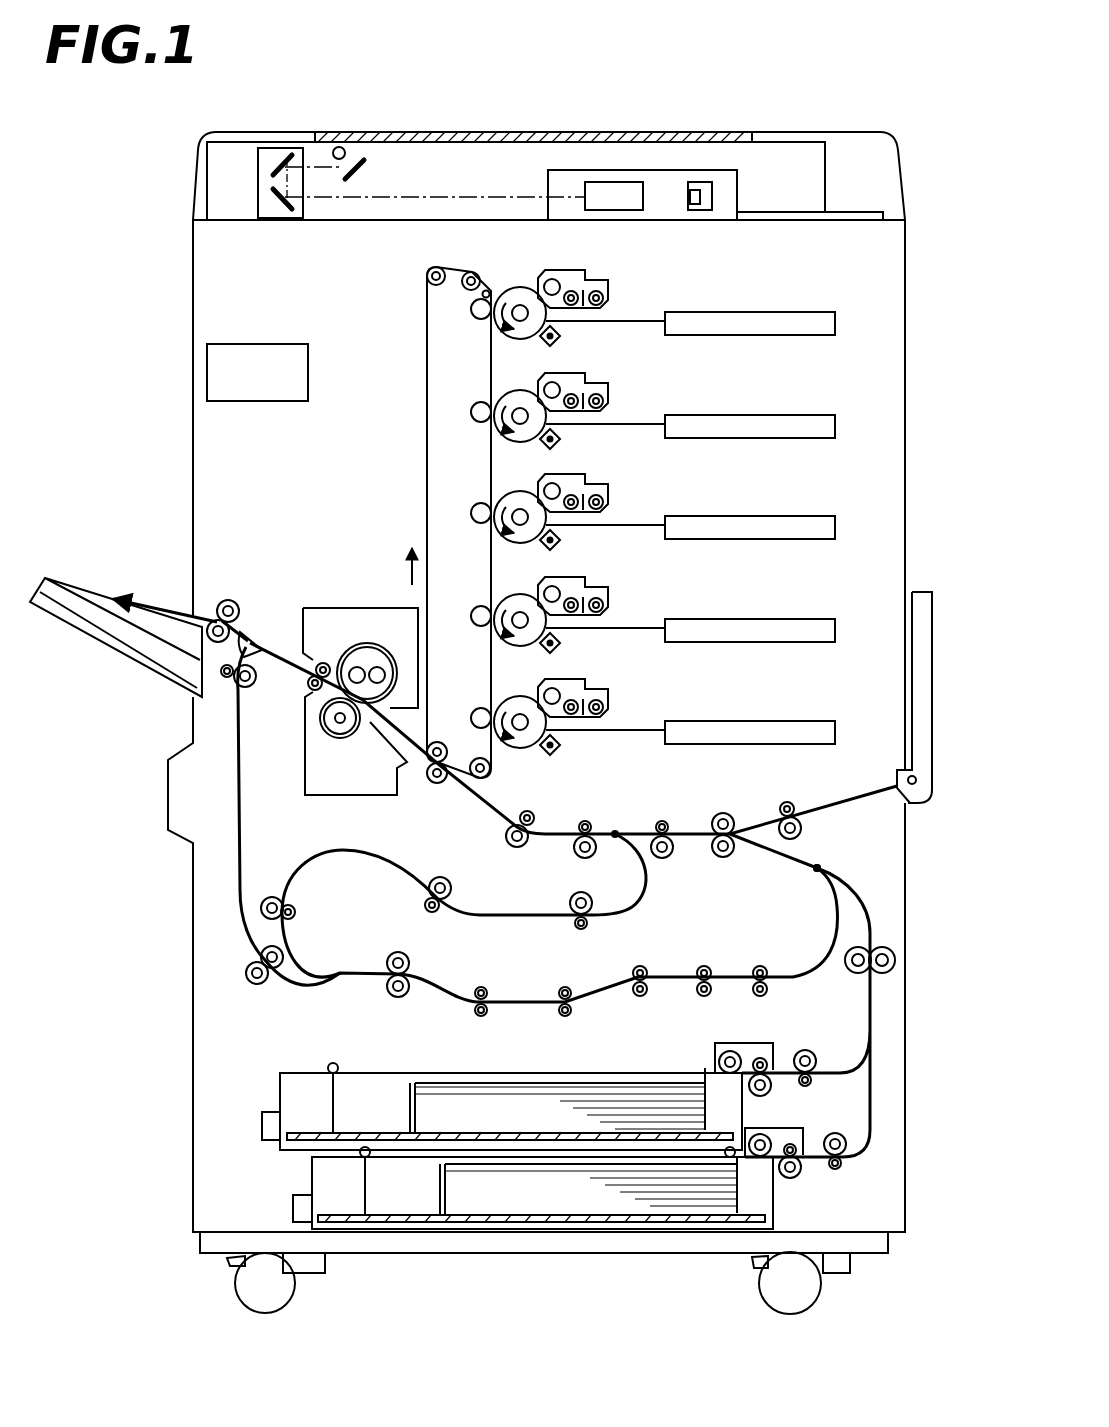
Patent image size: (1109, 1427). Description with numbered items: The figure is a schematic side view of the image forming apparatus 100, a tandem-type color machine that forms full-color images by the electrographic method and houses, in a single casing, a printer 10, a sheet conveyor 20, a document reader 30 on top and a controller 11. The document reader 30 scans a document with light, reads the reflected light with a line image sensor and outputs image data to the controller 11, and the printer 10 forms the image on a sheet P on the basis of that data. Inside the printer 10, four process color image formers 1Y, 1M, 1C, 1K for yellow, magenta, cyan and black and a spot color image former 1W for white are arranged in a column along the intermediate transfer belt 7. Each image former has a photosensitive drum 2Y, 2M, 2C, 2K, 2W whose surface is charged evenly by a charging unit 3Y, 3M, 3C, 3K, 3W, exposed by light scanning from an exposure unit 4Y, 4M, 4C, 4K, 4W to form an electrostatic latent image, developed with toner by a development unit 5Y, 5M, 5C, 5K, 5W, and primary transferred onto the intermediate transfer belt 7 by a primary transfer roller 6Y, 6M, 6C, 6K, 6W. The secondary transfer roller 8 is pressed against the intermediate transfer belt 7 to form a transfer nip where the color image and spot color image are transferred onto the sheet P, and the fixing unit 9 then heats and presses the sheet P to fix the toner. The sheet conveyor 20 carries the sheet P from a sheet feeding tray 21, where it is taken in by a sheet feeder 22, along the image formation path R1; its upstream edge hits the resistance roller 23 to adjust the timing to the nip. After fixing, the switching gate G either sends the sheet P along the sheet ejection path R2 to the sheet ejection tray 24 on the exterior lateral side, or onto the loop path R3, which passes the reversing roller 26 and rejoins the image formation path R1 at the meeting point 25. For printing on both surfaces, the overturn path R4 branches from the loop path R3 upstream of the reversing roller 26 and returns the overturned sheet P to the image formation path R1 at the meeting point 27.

The image forming apparatus 100 is at (713, 113).
The document reader 30 is at (805, 178).
The printer 10 is at (870, 257).
The controller 11 is at (207, 365).
The image former 1Y is at (664, 308).
The image former 1M is at (665, 411).
The image former 1C is at (661, 512).
The image former 1K is at (663, 615).
The image former 1W is at (667, 717).
The photosensitive drum 2Y is at (518, 289).
The photosensitive drum 2M is at (518, 397).
The photosensitive drum 2C is at (518, 498).
The photosensitive drum 2K is at (518, 601).
The photosensitive drum 2W is at (518, 703).
The charging unit 3Y is at (561, 343).
The charging unit 3M is at (582, 449).
The charging unit 3C is at (579, 550).
The charging unit 3K is at (580, 653).
The charging unit 3W is at (584, 755).
The exposure unit 4Y is at (836, 325).
The exposure unit 4M is at (724, 421).
The exposure unit 4C is at (720, 522).
The exposure unit 4K is at (722, 625).
The exposure unit 4W is at (726, 727).
The development unit 5Y is at (608, 296).
The development unit 5M is at (611, 390).
The development unit 5C is at (608, 491).
The development unit 5K is at (609, 594).
The development unit 5W is at (613, 696).
The primary transfer roller 6Y is at (473, 318).
The primary transfer roller 6M is at (459, 395).
The primary transfer roller 6C is at (459, 496).
The primary transfer roller 6K is at (459, 599).
The primary transfer roller 6W is at (459, 701).
The intermediate transfer belt 7 is at (425, 465).
The secondary transfer roller 8 is at (432, 783).
The fixing unit 9 is at (365, 606).
The switching gate G is at (258, 638).
The sheet ejection tray 24 is at (72, 592).
The image formation path R1 is at (796, 856).
The sheet ejection path R2 is at (216, 602).
The loop path R3 is at (236, 797).
The overturn path R4 is at (312, 851).
The sheet conveyor 20 is at (482, 1084).
The sheet feeding tray 21 is at (280, 1088).
The sheet feeder 22 is at (760, 1047).
The resistance roller 23 is at (509, 848).
The meeting point 25 is at (812, 873).
The reversing roller 26 is at (410, 962).
The meeting point 27 is at (611, 839).
The sheet P is at (605, 1090).